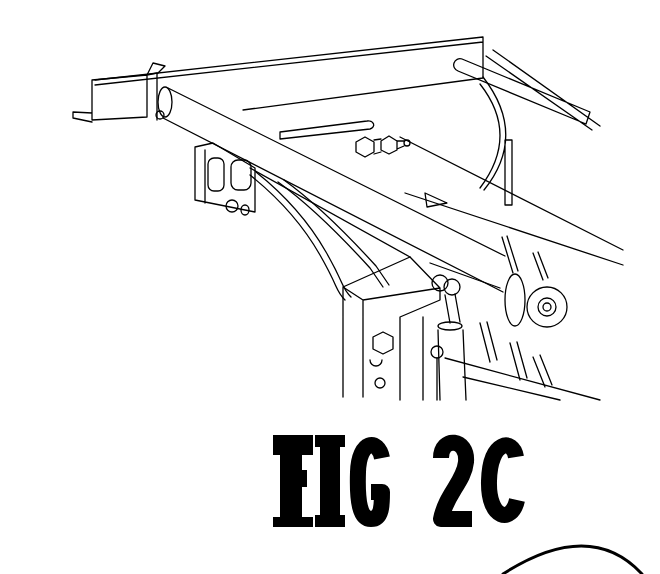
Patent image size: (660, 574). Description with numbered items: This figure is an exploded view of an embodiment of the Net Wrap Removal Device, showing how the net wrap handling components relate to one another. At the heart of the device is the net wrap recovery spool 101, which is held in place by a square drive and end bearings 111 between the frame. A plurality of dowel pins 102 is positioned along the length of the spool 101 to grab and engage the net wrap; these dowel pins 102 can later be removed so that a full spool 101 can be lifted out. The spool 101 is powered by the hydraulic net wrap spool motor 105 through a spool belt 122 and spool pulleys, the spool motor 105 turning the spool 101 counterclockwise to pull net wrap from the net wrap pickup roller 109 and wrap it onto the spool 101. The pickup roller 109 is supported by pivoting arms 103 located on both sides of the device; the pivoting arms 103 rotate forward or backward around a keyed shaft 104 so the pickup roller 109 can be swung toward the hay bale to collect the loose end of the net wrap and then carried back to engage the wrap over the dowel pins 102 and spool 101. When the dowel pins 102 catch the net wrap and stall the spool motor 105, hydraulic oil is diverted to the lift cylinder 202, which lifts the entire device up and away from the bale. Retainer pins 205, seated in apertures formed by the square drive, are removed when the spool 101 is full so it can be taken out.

The net wrap recovery spool 101 is at (520, 226).
The dowel pins 102 is at (508, 161).
The pivoting arms 103 is at (137, 97).
The keyed shaft 104 is at (510, 92).
The hydraulic net wrap spool motor 105 is at (228, 162).
The net wrap pickup roller 109 is at (392, 218).
The end bearings 111 is at (380, 152).
The spool belt 122 is at (328, 127).
The lift cylinder 202 is at (453, 363).
The retainer pins 205 is at (403, 158).